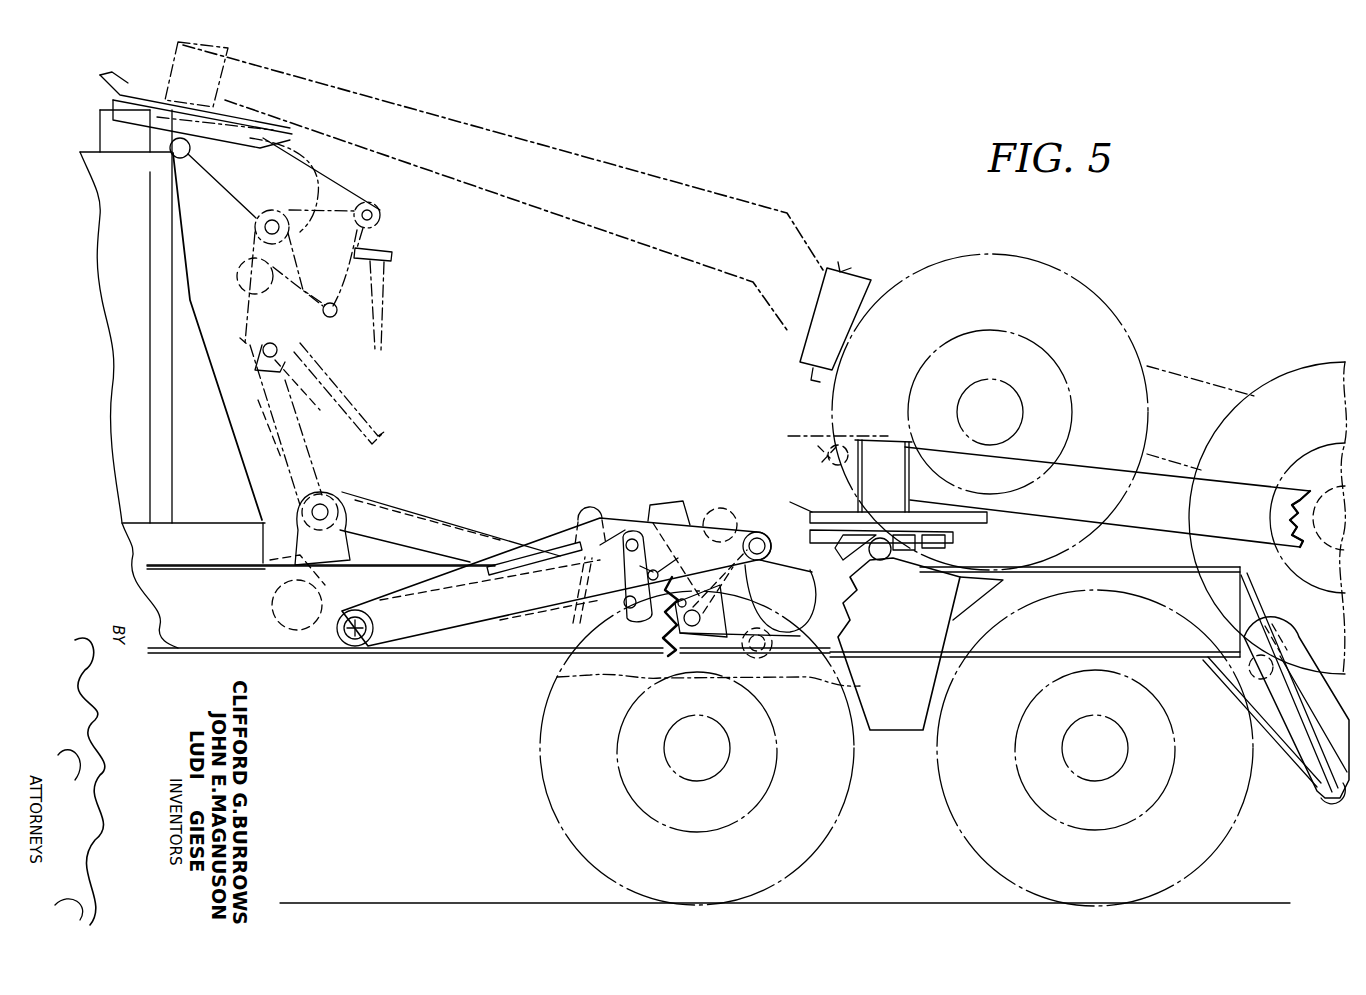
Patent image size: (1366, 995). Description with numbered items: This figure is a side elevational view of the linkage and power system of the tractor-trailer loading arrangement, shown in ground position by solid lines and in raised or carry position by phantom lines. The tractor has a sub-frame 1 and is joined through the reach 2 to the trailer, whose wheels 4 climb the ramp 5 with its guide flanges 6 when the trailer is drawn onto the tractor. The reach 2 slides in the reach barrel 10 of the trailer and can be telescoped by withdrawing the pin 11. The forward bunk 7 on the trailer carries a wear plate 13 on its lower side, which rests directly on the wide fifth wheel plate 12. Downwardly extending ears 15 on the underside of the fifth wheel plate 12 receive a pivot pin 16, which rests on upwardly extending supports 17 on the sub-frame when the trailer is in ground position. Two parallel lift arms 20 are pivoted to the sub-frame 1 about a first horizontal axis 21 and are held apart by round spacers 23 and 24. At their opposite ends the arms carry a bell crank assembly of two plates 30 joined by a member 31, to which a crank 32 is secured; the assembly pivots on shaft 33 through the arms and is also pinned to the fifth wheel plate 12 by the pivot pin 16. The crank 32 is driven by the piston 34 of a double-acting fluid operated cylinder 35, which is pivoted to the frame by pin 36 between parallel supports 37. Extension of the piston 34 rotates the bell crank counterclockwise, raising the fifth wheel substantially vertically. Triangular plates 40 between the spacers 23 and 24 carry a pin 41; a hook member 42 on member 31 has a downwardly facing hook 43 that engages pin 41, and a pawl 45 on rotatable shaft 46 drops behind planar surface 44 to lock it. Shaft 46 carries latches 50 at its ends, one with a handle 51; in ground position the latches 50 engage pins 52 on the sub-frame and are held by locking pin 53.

The sub-frame 1 is at (265, 640).
The reach 2 is at (708, 205).
The wheels 4 is at (1108, 340).
The ramp 5 is at (1300, 768).
The guide flanges 6 is at (1322, 709).
The bunk 7 is at (893, 458).
The reach barrel 10 is at (862, 300).
The pin 11 is at (840, 262).
The fifth wheel plate 12 is at (955, 530).
The wear plate 13 is at (815, 450).
The ears 15 is at (905, 545).
The pivot pin 16 is at (880, 537).
The supports 17 is at (888, 560).
The lift arms 20 is at (442, 624).
The first horizontal axis 21 is at (357, 640).
The round spacer 23 is at (268, 415).
The round spacer 24 is at (240, 270).
The plates 30 is at (841, 579).
The member 31 is at (795, 625).
The crank 32 is at (730, 637).
The shaft 33 is at (757, 538).
The piston 34 is at (655, 650).
The fluid operated cylinder 35 is at (380, 272).
The pin 36 is at (326, 508).
The supports 37 is at (282, 578).
The triangular plates 40 is at (380, 328).
The pin 41 is at (338, 311).
The hook member 42 is at (692, 530).
The hook 43 is at (650, 518).
The planar surface 44 is at (682, 503).
The pawl 45 is at (318, 352).
The shaft 46 is at (632, 538).
The latch 50 is at (642, 558).
The handle 51 is at (549, 547).
The pins 52 is at (626, 610).
The locking pin 53 is at (669, 561).